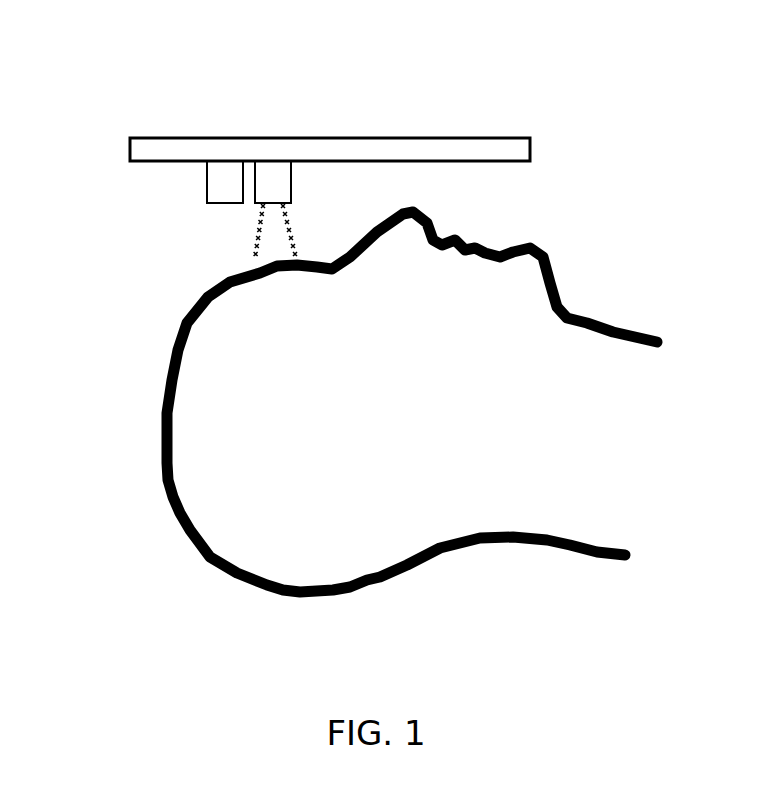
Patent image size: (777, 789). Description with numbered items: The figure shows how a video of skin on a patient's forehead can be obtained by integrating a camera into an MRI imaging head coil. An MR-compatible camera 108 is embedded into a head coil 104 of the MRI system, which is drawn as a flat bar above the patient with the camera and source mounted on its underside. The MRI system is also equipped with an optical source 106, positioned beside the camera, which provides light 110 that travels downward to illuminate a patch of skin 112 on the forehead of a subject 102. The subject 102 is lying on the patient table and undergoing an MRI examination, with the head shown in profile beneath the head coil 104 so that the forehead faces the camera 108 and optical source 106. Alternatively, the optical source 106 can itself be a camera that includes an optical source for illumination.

The subject 102 is at (457, 432).
The head coil 104 is at (495, 148).
The optical source 106 is at (271, 173).
The MR-compatible camera 108 is at (222, 173).
The light 110 is at (257, 236).
The patch of skin 112 is at (252, 263).